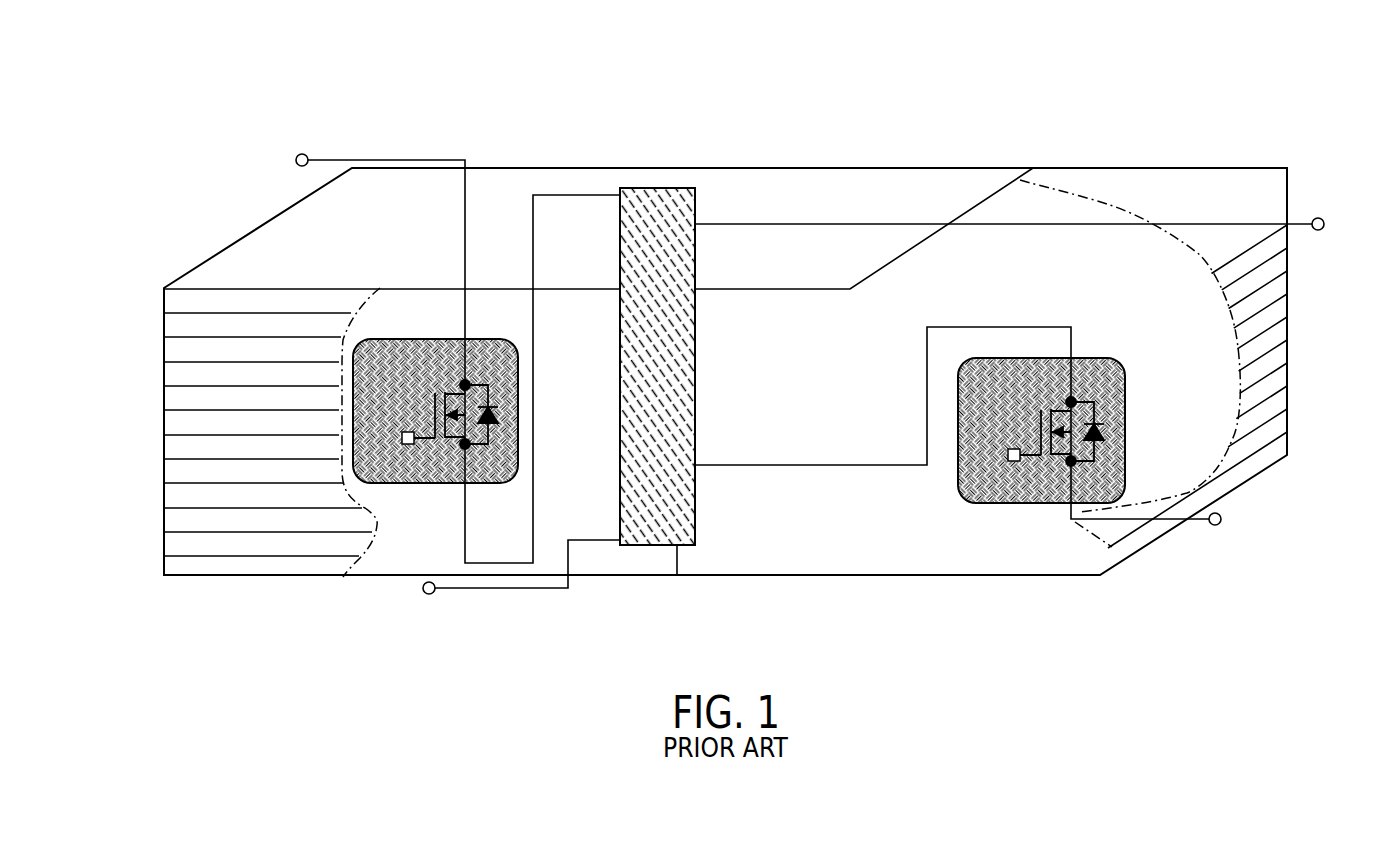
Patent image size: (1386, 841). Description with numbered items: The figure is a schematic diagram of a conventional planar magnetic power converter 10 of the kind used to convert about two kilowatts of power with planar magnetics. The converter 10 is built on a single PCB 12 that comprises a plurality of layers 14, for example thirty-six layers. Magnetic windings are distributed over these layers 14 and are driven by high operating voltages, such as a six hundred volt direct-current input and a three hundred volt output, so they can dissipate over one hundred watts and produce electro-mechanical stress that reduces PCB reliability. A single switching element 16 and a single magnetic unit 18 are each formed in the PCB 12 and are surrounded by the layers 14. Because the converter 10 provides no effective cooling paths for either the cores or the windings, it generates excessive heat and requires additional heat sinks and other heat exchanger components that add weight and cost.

The planar magnetic power converter 10 is at (747, 357).
The PCB 12 is at (225, 274).
The layers 14 is at (178, 402).
The switching element 16 is at (418, 483).
The magnetic unit 18 is at (672, 188).